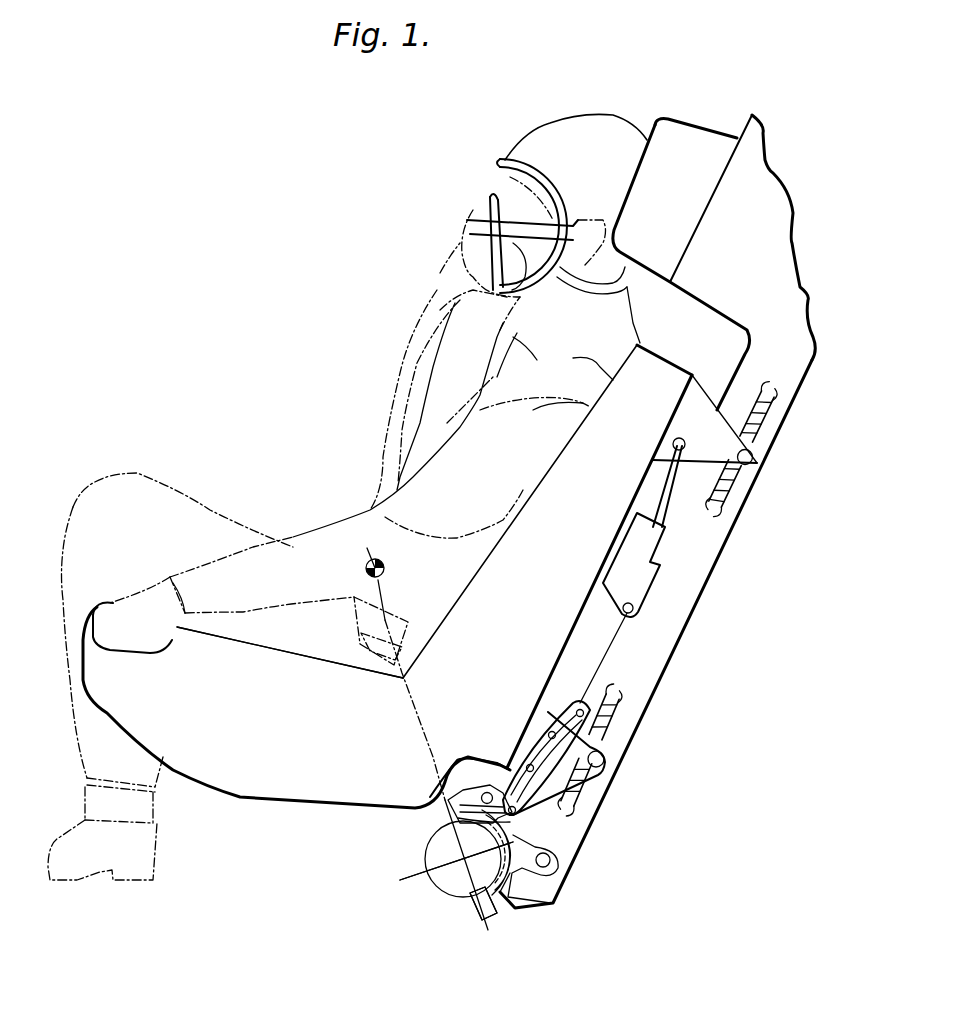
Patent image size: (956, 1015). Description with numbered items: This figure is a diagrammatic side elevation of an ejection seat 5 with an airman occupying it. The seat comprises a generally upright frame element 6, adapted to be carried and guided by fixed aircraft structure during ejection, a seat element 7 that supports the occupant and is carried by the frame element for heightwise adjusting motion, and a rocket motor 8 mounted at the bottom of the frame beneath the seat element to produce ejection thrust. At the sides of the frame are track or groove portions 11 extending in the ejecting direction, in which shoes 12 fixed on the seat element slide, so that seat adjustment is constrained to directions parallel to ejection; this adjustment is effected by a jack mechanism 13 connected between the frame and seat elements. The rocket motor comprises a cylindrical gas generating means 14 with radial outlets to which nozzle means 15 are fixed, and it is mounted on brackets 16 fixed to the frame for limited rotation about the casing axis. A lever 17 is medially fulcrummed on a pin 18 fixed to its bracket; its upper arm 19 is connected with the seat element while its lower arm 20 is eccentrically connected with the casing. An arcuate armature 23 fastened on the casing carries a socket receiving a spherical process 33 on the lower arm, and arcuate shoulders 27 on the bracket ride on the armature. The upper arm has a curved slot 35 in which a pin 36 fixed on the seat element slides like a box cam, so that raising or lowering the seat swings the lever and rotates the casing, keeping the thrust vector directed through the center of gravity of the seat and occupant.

The ejection seat 5 is at (345, 825).
The frame element 6 is at (680, 625).
The seat element 7 is at (265, 805).
The rocket motor 8 is at (440, 897).
The track or groove portions 11 is at (775, 413).
The shoes 12 is at (760, 450).
The jack mechanism 13 is at (648, 546).
The gas generating means 14 is at (430, 850).
The nozzle means 15 is at (473, 905).
The brackets 16 is at (540, 870).
The lever 17 is at (512, 771).
The pin 18 is at (515, 815).
The upper arm 19 is at (552, 718).
The lower arm 20 is at (496, 790).
The arcuate armature 23 is at (500, 907).
The arcuate shoulders 27 is at (545, 906).
The spherical process 33 is at (465, 832).
The curved slot 35 is at (582, 705).
The pin 36 is at (548, 737).